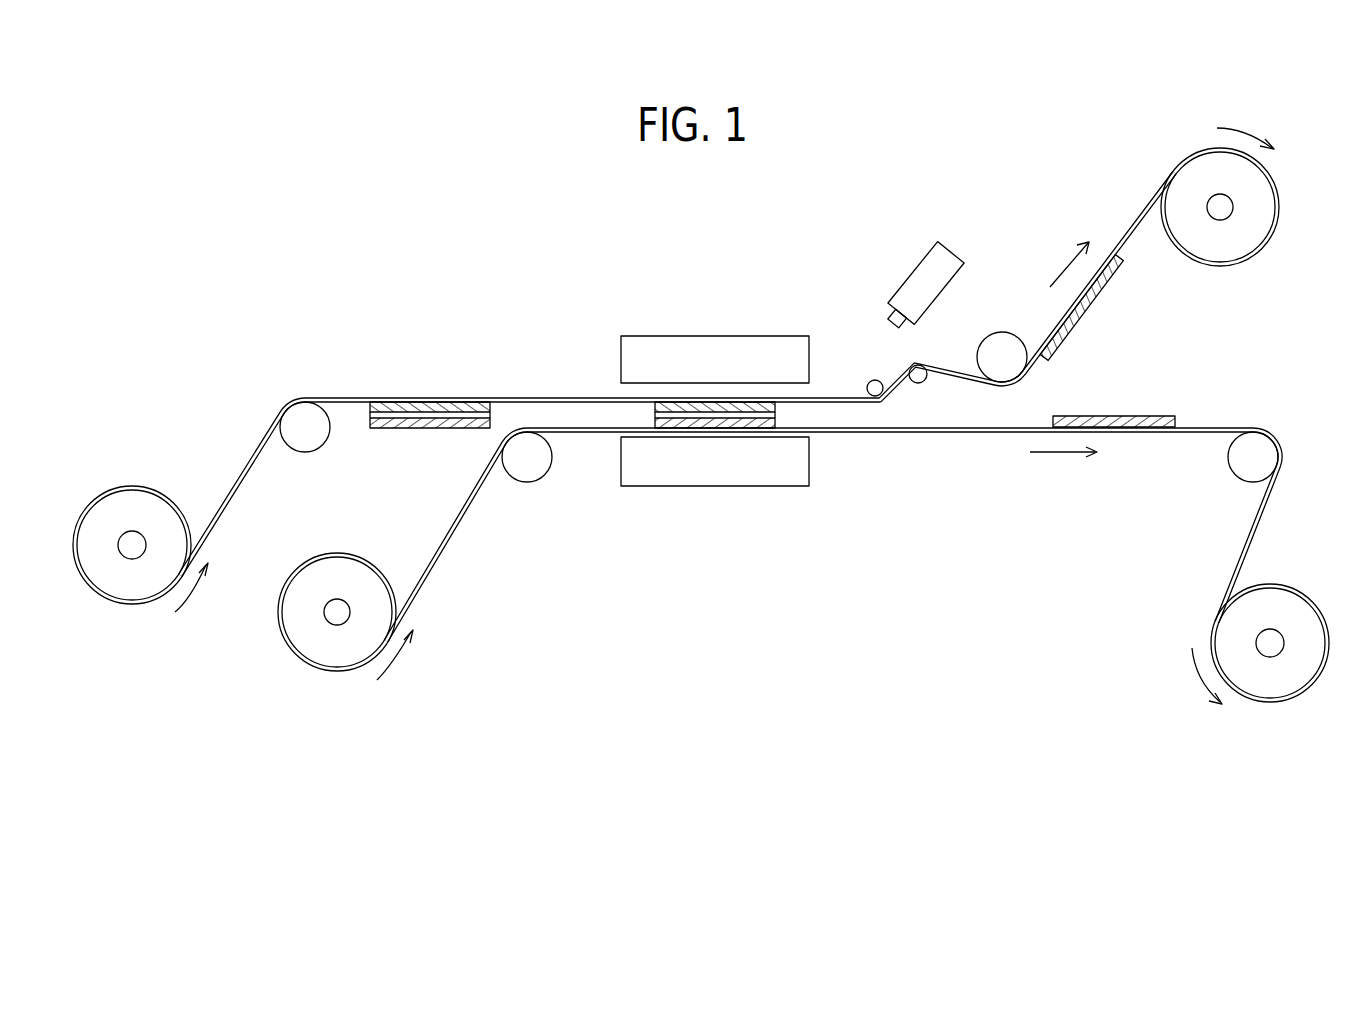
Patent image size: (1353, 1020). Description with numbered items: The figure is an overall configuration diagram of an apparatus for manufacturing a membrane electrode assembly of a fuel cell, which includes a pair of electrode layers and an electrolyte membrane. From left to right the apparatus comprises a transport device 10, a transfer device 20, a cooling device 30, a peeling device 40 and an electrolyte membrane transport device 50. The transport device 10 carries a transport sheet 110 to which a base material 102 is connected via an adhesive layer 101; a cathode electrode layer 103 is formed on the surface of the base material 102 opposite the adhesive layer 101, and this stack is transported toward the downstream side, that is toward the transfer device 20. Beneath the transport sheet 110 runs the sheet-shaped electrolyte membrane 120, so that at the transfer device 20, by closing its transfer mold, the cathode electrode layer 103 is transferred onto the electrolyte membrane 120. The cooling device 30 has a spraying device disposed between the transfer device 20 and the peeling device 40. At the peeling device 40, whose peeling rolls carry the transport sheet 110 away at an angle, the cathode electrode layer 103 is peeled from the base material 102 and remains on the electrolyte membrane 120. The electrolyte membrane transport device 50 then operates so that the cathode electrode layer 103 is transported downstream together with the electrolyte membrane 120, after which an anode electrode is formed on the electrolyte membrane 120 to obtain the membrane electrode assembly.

The transport device 10 is at (129, 497).
The transfer device 20 is at (722, 326).
The cooling device 30 is at (903, 253).
The peeling device 40 is at (908, 402).
The electrolyte membrane transport device 50 is at (1278, 688).
The adhesive layer 101 is at (404, 413).
The base material 102 is at (369, 411).
The cathode electrode layer 103 is at (412, 424).
The transport sheet 110 is at (548, 398).
The electrolyte membrane 120 is at (572, 433).